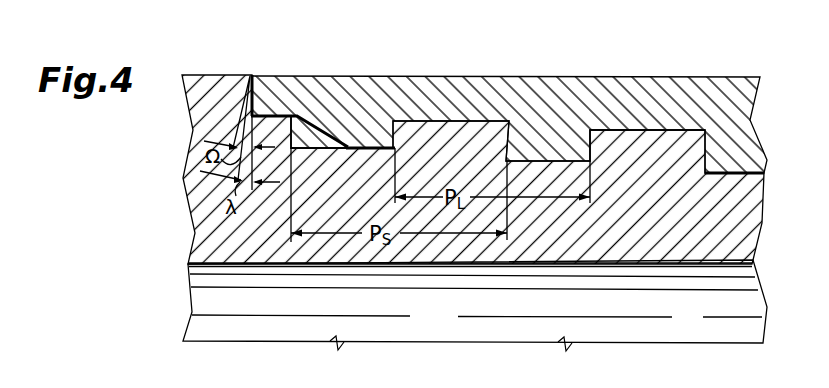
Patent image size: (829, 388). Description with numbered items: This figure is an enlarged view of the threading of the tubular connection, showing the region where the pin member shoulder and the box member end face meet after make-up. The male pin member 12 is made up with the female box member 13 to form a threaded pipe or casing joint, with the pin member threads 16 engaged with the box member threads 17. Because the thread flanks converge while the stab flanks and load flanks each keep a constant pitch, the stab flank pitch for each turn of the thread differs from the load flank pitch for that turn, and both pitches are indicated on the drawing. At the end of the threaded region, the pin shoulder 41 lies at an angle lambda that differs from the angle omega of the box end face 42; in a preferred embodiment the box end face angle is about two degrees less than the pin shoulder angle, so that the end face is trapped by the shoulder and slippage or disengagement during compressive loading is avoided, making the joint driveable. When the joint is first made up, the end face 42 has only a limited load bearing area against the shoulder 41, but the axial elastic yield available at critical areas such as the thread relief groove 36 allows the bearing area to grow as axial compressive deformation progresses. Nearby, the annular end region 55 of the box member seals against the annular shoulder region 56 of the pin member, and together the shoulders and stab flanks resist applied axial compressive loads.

The pin member 12 is at (437, 263).
The box member 13 is at (537, 85).
The pin member threads 16 is at (666, 140).
The box member threads 17 is at (576, 150).
The thread relief groove 36 is at (321, 130).
The pin member shoulder 41 is at (249, 77).
The box member end face 42 is at (253, 98).
The annular end region of the box member 55 is at (368, 146).
The annular shoulder region of the pin member 56 is at (318, 150).